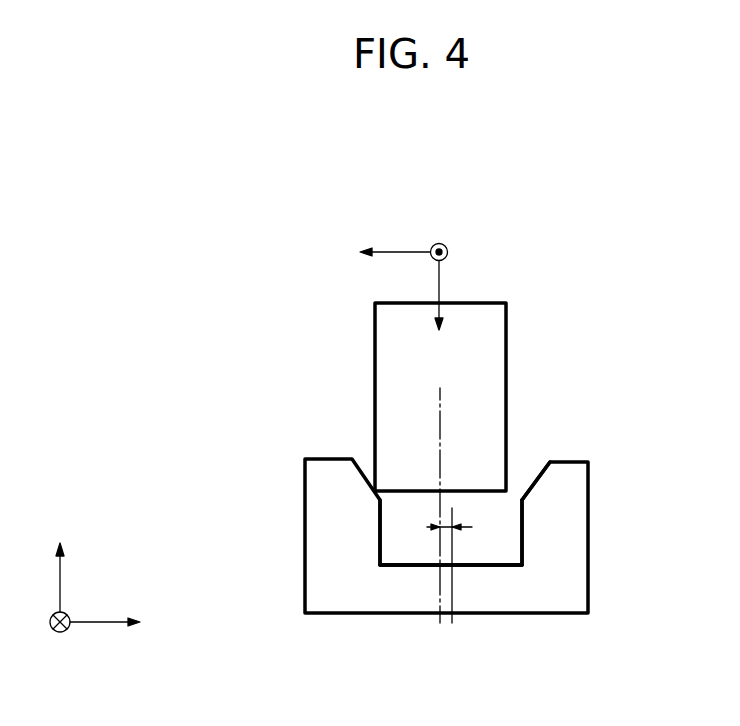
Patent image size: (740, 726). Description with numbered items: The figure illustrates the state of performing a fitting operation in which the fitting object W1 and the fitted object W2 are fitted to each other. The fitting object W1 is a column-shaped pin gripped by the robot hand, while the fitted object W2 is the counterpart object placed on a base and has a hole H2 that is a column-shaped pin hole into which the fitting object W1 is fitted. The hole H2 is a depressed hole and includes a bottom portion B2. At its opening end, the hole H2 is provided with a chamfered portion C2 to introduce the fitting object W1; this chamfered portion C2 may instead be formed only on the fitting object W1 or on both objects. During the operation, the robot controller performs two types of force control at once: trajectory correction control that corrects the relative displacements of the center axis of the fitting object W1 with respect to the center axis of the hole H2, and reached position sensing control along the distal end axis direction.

The fitting object W1 is at (507, 382).
The fitted object W2 is at (588, 505).
The chamfered portion C2 is at (533, 472).
The hole H2 is at (412, 527).
The bottom portion B2 is at (482, 559).